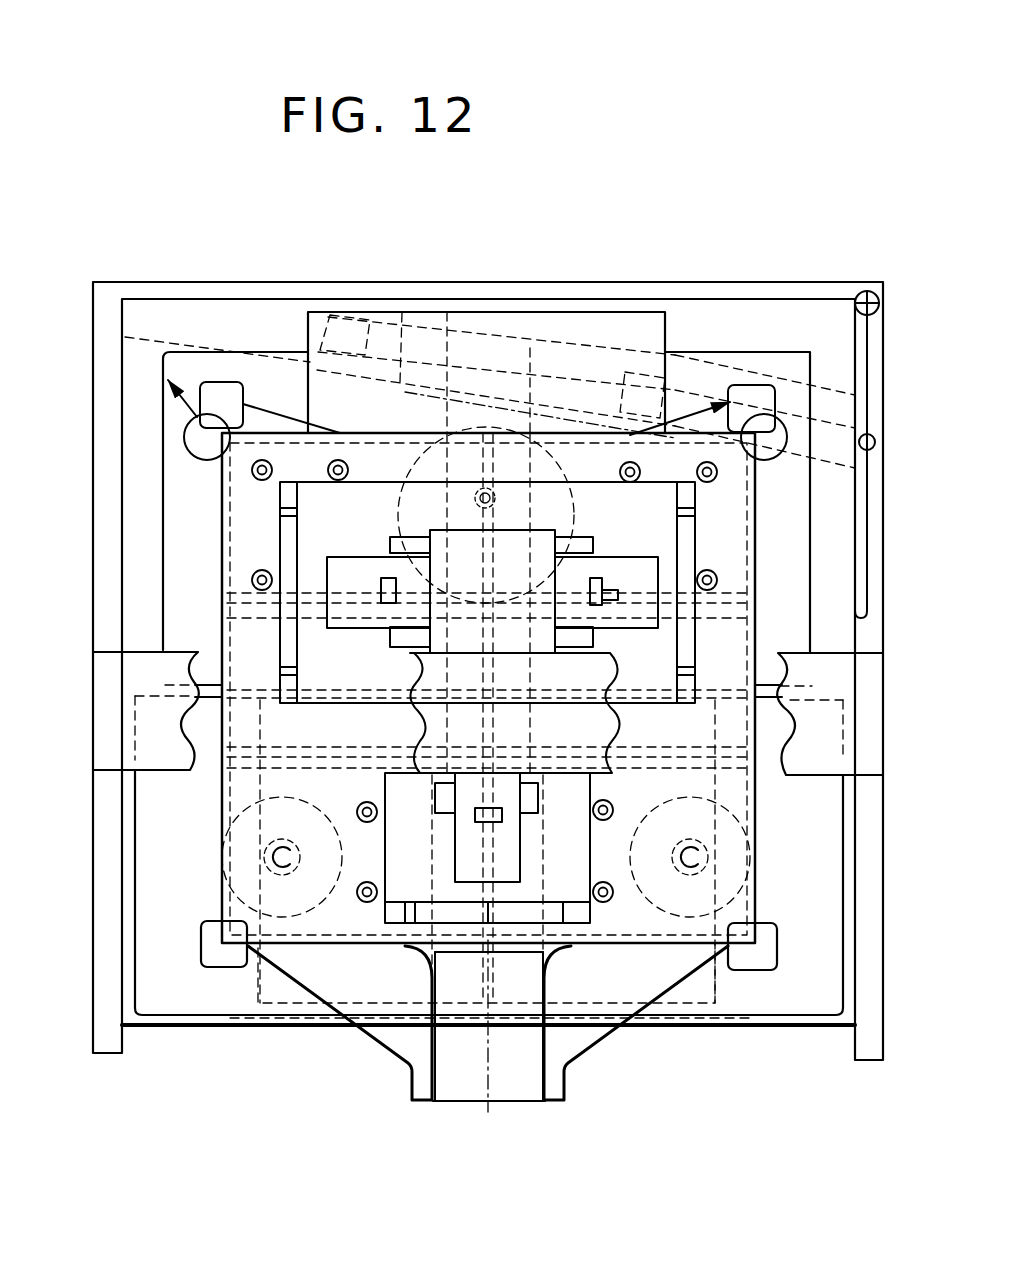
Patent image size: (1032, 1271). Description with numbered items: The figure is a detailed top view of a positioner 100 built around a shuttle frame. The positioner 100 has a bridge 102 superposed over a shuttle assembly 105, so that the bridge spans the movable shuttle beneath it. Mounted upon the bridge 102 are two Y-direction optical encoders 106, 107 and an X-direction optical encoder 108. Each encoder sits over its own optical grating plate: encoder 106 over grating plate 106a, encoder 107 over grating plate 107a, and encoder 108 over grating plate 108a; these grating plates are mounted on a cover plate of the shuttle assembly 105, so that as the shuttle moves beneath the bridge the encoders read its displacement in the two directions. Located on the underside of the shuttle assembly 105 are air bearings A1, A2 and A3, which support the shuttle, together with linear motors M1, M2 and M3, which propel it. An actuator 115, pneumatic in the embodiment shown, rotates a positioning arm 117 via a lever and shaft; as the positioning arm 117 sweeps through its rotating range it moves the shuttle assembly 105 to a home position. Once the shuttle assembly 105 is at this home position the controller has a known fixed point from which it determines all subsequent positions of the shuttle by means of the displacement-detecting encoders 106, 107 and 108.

The positioner 100 is at (845, 227).
The bridge 102 is at (878, 728).
The shuttle assembly 105 is at (762, 610).
The Y-direction optical encoder 106 is at (607, 593).
The optical grating plate 106a is at (653, 482).
The Y-direction optical encoder 107 is at (380, 588).
The optical grating plate 107a is at (320, 472).
The X-direction optical encoder 108 is at (486, 822).
The optical grating plate 108a is at (385, 845).
The actuator 115 is at (490, 345).
The positioning arm 117 is at (883, 518).
The air bearing A1 is at (228, 890).
The air bearing A2 is at (632, 1027).
The air bearing A3 is at (407, 345).
The linear motor M1 is at (632, 1030).
The linear motor M2 is at (713, 537).
The linear motor M3 is at (233, 497).